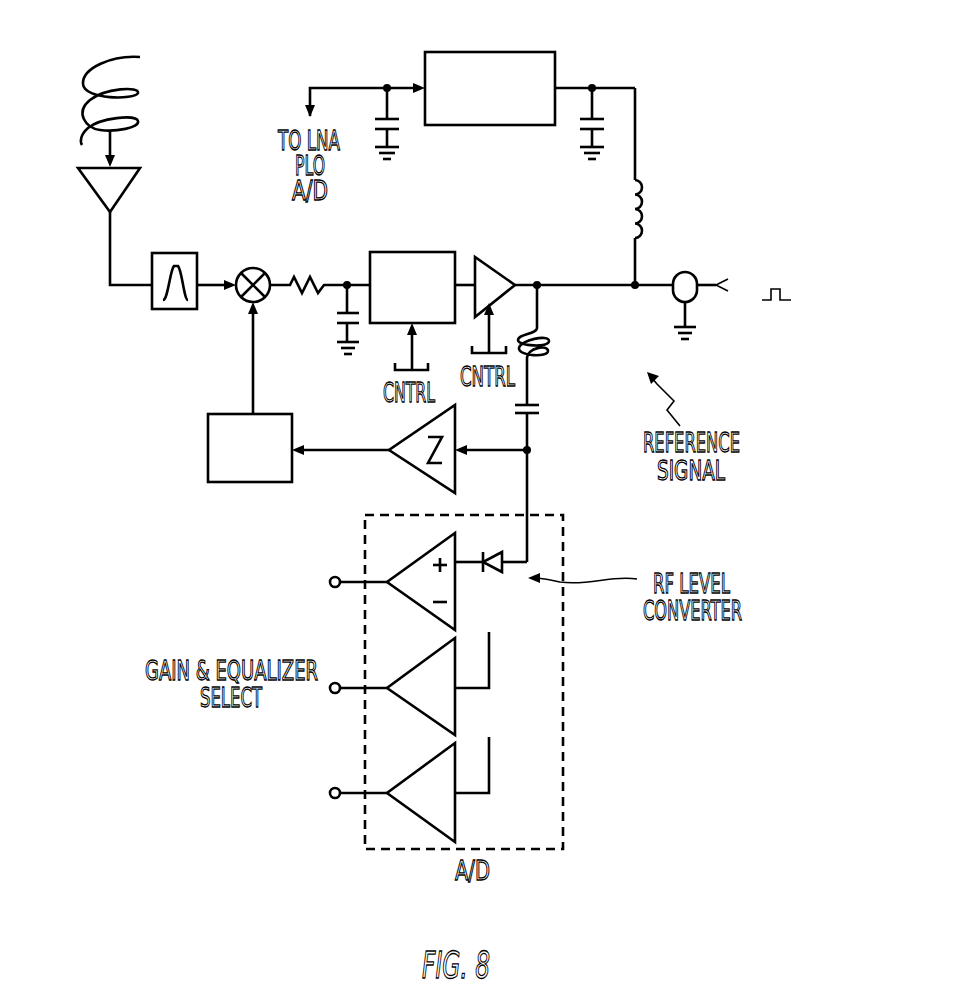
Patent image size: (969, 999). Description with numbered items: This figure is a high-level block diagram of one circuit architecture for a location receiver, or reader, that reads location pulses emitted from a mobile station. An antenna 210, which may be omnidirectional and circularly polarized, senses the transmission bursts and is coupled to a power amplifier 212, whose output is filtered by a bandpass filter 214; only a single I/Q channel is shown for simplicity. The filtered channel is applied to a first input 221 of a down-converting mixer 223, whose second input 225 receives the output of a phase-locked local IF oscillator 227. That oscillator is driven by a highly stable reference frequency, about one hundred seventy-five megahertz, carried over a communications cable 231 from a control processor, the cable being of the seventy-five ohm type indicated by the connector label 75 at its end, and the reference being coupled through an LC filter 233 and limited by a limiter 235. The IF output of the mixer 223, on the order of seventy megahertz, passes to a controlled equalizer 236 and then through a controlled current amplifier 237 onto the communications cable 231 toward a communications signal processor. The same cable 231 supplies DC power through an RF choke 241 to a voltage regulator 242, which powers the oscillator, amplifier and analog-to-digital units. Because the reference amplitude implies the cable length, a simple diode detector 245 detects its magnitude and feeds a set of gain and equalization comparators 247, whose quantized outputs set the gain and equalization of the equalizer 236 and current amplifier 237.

The antenna 210 is at (139, 82).
The power amplifier 212 is at (94, 189).
The bandpass filter 214 is at (176, 310).
The first input 221 is at (238, 272).
The down-converting mixer 223 is at (250, 268).
The second input 225 is at (244, 298).
The phase-locked local IF oscillator 227 is at (208, 450).
The communications cable 231 is at (574, 286).
The LC filter 233 is at (543, 332).
The limiter 235 is at (410, 437).
The controlled equalizer 236 is at (414, 252).
The controlled current amplifier 237 is at (500, 266).
The RF choke 241 is at (631, 200).
The voltage regulator 242 is at (530, 52).
The diode detector 245 is at (495, 556).
The gain and equalization comparators 247 is at (499, 757).
The coaxial connector 75 is at (732, 305).